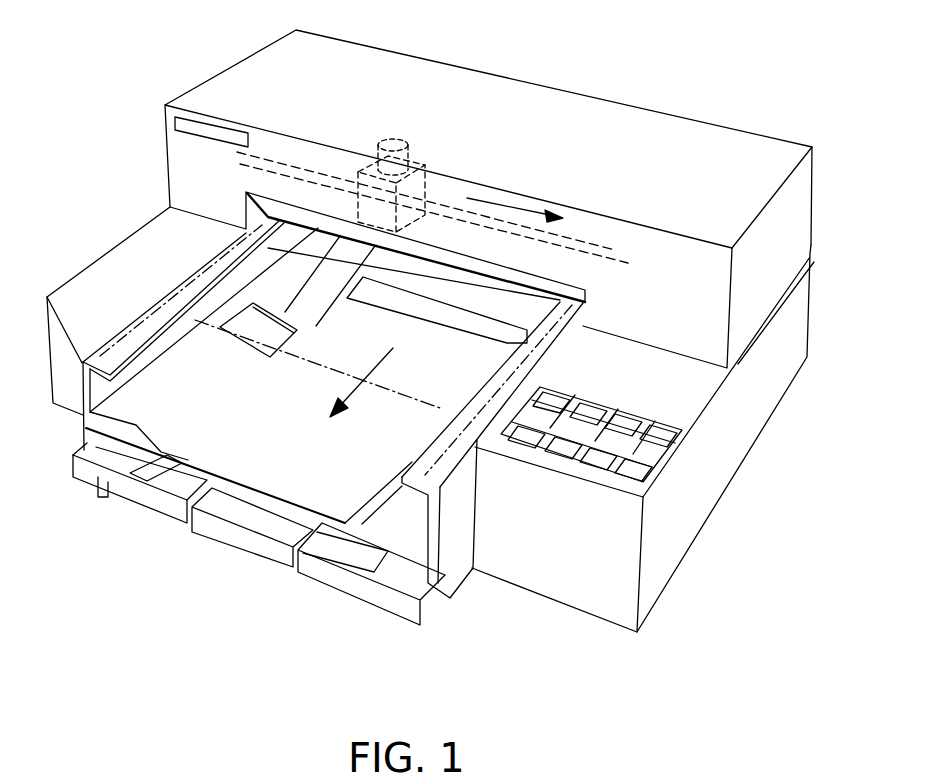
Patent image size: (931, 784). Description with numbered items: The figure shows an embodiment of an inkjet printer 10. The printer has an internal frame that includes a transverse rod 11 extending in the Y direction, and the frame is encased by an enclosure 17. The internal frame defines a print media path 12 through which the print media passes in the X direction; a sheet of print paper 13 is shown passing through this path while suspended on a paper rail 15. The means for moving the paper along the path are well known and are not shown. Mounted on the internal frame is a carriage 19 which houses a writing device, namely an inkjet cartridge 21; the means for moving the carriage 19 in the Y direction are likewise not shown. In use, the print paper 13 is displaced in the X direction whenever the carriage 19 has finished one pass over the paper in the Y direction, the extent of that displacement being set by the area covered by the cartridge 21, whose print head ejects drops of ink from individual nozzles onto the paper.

The inkjet printer 10 is at (752, 506).
The transverse rod 11 is at (602, 245).
The print media path 12 is at (227, 458).
The sheet of print paper 13 is at (397, 393).
The paper rail 15 is at (442, 460).
The enclosure 17 is at (512, 95).
The carriage 19 is at (365, 165).
The inkjet cartridge 21 is at (408, 156).